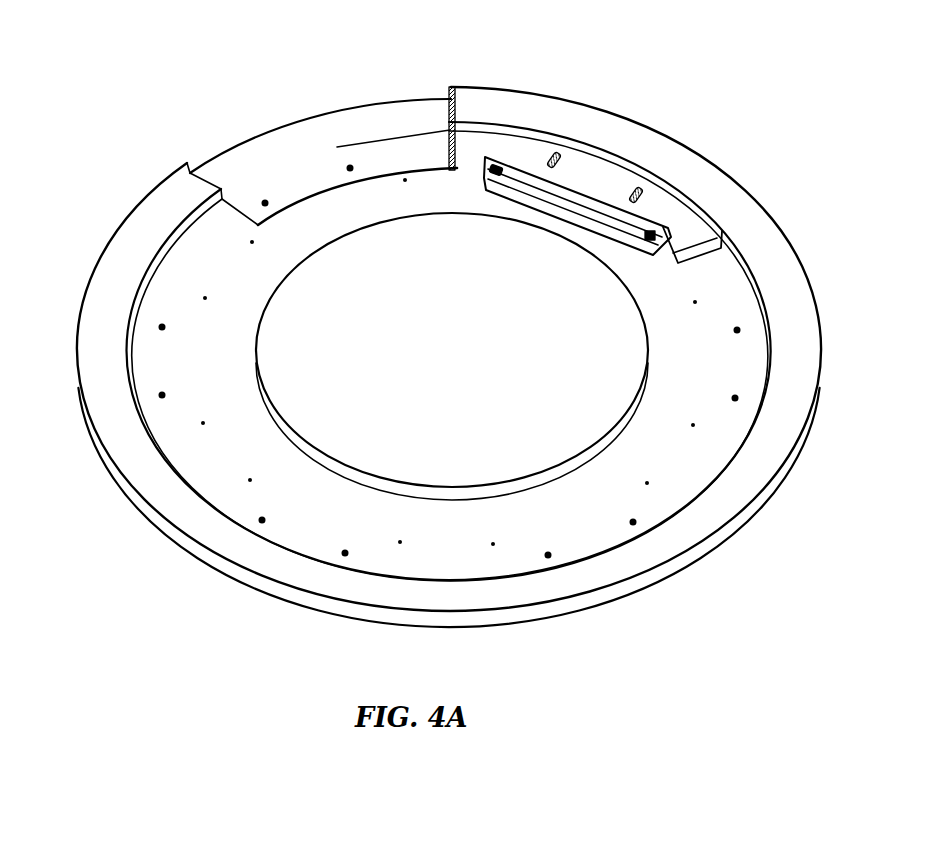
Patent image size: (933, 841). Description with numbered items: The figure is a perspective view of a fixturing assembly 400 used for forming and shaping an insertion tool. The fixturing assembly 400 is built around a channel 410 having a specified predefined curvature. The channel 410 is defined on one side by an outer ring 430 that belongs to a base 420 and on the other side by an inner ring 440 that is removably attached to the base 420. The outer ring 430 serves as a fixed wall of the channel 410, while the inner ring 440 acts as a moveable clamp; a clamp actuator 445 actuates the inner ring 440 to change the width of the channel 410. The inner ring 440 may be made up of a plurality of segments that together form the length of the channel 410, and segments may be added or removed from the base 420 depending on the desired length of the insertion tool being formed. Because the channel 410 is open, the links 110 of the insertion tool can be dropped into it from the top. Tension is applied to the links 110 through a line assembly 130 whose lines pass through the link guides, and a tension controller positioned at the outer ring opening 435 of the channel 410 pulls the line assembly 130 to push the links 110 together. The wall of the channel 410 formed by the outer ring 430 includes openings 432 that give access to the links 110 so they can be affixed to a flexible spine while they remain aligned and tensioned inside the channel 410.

The fixturing assembly 400 is at (803, 181).
The links 110 is at (617, 147).
The line assembly 130 is at (371, 138).
The channel 410 is at (683, 190).
The base 420 is at (670, 350).
The outer ring 430 is at (806, 322).
The openings 432 is at (753, 512).
The outer ring opening 435 is at (434, 88).
The inner ring 440 is at (447, 154).
The clamp actuator 445 is at (528, 206).